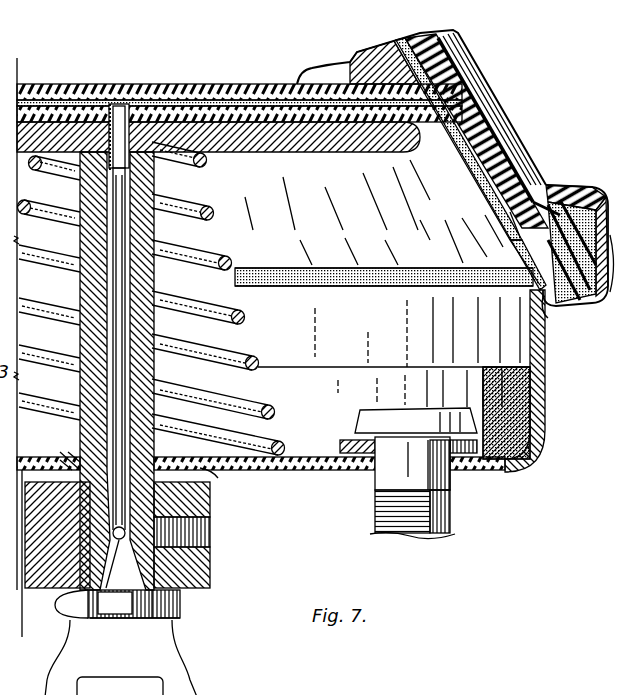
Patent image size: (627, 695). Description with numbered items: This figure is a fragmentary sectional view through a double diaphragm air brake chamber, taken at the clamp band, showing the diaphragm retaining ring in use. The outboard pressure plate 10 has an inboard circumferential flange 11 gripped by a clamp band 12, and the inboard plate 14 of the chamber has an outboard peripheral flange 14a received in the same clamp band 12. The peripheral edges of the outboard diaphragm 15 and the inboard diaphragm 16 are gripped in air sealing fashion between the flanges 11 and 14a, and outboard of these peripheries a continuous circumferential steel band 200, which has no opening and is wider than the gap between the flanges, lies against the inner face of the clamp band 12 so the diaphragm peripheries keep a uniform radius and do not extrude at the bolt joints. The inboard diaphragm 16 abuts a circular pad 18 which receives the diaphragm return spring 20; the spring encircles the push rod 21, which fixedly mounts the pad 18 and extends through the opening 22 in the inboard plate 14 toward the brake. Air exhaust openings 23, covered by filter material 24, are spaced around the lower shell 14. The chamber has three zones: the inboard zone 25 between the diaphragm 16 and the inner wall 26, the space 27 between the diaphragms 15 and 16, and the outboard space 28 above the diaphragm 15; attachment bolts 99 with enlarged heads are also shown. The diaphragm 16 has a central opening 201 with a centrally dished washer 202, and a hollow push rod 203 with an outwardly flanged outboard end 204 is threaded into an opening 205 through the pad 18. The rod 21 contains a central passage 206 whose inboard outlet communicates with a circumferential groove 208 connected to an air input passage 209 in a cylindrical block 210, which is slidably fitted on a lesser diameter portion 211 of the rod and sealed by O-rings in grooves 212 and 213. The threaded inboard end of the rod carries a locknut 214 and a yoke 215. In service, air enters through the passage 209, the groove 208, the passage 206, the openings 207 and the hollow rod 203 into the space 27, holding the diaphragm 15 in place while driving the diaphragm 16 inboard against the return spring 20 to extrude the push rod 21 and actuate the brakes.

The outboard pressure plate 10 is at (470, 84).
The inboard circumferential flange 11 is at (556, 184).
The clamp band 12 is at (600, 200).
The inboard plate 14 is at (530, 392).
The outboard peripheral flange 14a is at (545, 330).
The outboard diaphragm 15 is at (147, 84).
The inboard diaphragm 16 is at (470, 193).
The circular pad 18 is at (288, 153).
The diaphragm return spring 20 is at (243, 310).
The push rod 21 is at (150, 322).
The opening 22 is at (160, 440).
The air exhaust openings 23 is at (518, 443).
The filter material 24 is at (480, 393).
The inboard zone 25 is at (352, 335).
The inner wall 26 is at (309, 456).
The space between diaphragms 27 is at (485, 114).
The outboard space 28 is at (450, 46).
The attachment bolts 99 is at (452, 500).
The continuous circumferential steel band 200 is at (562, 302).
The opening 201 is at (220, 153).
The centrally dished washer 202 is at (62, 84).
The hollow push rod 203 is at (80, 186).
The outwardly flanged outboard end 204 is at (122, 84).
The opening 205 is at (154, 178).
The central passage 206 is at (130, 240).
The openings 207 is at (117, 604).
The circumferential groove 208 is at (25, 536).
The air input passage 209 is at (212, 520).
The cylindrical block 210 is at (210, 572).
The lesser diameter portion 211 is at (68, 452).
The O-ring groove 212 is at (182, 600).
The O-ring groove 213 is at (214, 477).
The locknut 214 is at (182, 624).
The yoke 215 is at (195, 686).